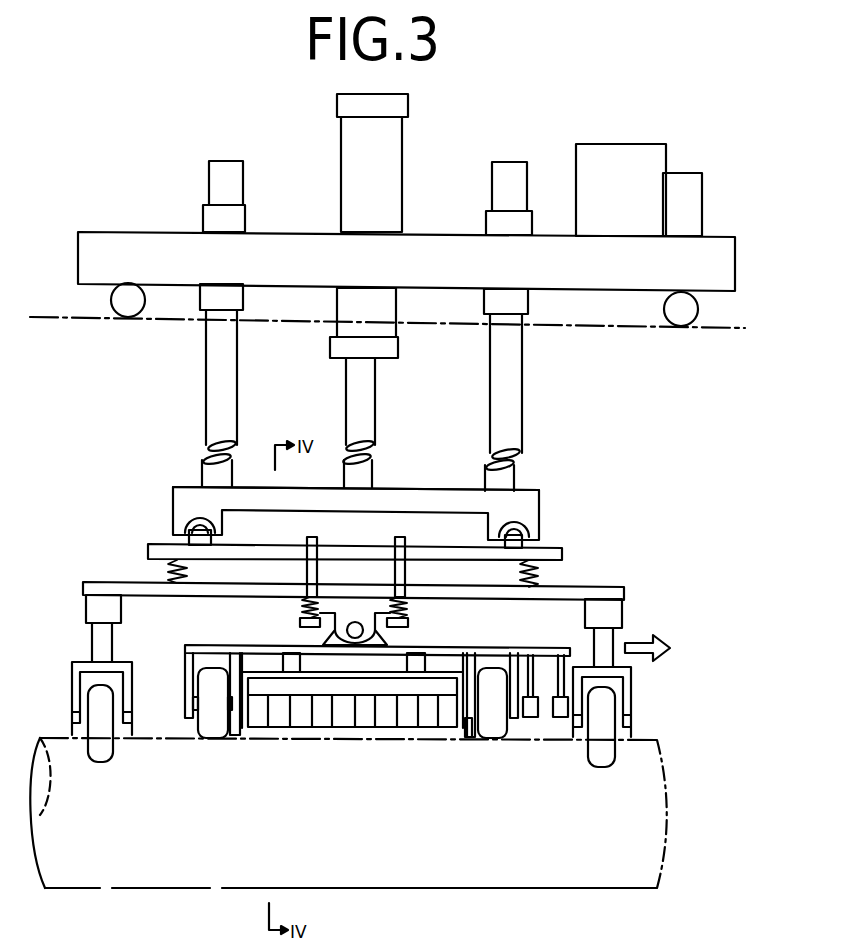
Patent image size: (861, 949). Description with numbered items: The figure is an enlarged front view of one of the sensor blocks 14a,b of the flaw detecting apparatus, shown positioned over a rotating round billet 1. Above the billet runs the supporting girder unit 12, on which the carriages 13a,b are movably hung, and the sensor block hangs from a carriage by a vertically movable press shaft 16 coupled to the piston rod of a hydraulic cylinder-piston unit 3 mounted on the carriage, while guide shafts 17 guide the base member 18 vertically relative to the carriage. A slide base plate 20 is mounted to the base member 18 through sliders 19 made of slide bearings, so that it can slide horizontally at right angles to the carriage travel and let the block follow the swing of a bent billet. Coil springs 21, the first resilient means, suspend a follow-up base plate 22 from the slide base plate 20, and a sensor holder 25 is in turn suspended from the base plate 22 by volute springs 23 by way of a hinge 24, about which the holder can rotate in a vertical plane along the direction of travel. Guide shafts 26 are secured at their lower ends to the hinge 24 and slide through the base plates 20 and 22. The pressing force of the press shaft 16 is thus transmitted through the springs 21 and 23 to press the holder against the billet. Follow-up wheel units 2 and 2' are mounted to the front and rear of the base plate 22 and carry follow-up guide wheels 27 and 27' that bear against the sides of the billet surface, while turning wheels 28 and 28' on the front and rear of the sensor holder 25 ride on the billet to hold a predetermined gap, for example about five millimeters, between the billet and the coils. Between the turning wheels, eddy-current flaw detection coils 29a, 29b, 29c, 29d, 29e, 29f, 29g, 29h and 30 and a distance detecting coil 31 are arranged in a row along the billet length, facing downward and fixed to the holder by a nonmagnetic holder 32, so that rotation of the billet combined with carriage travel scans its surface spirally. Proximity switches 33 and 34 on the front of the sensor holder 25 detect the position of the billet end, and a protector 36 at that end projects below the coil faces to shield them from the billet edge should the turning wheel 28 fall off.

The round billet 1 is at (559, 882).
The follow-up wheel unit 2 is at (627, 633).
The follow-up wheel unit 2' is at (85, 628).
The hydraulic cylinder-piston unit 3 is at (398, 157).
The supporting girder unit 12 is at (64, 316).
The carriages 13a,b is at (133, 230).
The sensor blocks 14a,b is at (608, 462).
The press shaft 16 is at (372, 470).
The guide shaft 17 is at (233, 482).
The base member 18 is at (540, 515).
The sliders 19 is at (215, 532).
The slide base plate 20 is at (562, 550).
The coil springs 21 is at (168, 572).
The follow-up base plate 22 is at (612, 587).
The springs 23 is at (405, 608).
The hinge 24 is at (365, 630).
The sensor holder 25 is at (467, 648).
The guide shafts 26 is at (406, 569).
The follow-up guide wheels 27 is at (622, 717).
The follow-up guide wheels 27' is at (81, 712).
The turning wheel 28 is at (498, 718).
The turning wheel 28' is at (212, 717).
The eddy-current flaw detection coil 29a is at (445, 722).
The eddy-current flaw detection coil 29b is at (423, 722).
The eddy-current flaw detection coil 29c is at (402, 722).
The eddy-current flaw detection coil 29d is at (380, 722).
The eddy-current flaw detection coil 29e is at (360, 722).
The eddy-current flaw detection coil 29f is at (340, 722).
The eddy-current flaw detection coil 29g is at (320, 722).
The eddy-current flaw detection coil 29h is at (300, 722).
The eddy-current flaw detection coil 30 is at (278, 722).
The distance detecting coil 31 is at (257, 722).
The holder 32 is at (272, 673).
The proximity switch 33 is at (560, 717).
The proximity switch 34 is at (530, 717).
The protector 36 is at (470, 733).